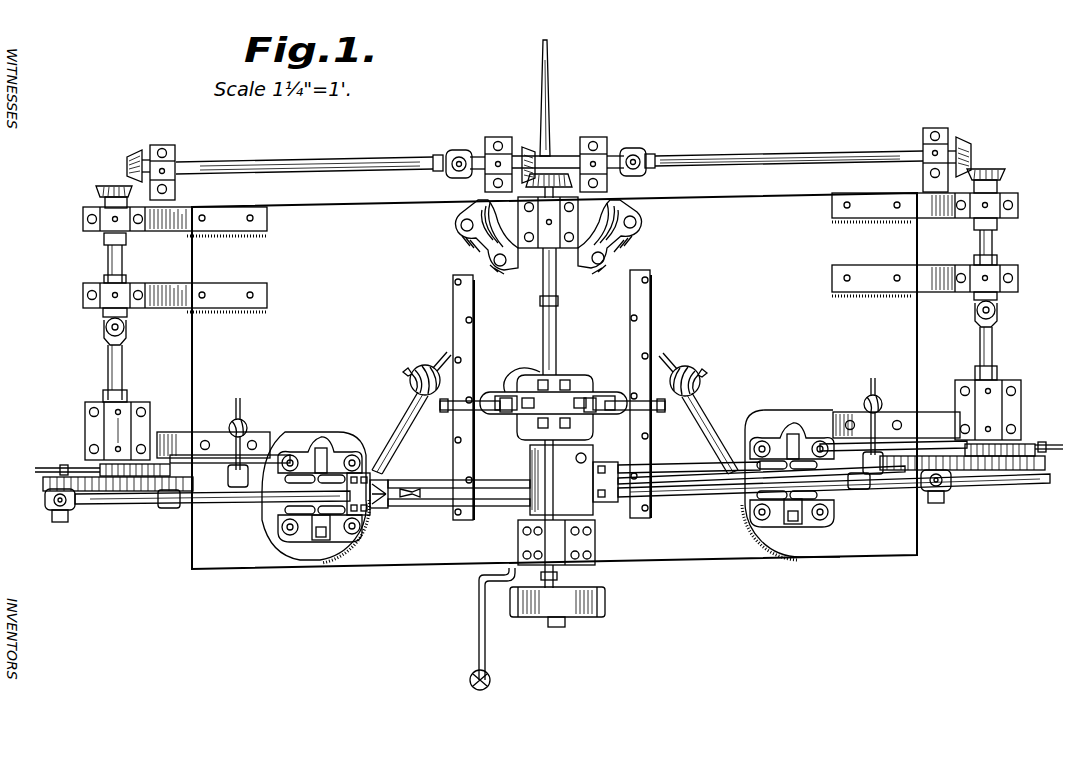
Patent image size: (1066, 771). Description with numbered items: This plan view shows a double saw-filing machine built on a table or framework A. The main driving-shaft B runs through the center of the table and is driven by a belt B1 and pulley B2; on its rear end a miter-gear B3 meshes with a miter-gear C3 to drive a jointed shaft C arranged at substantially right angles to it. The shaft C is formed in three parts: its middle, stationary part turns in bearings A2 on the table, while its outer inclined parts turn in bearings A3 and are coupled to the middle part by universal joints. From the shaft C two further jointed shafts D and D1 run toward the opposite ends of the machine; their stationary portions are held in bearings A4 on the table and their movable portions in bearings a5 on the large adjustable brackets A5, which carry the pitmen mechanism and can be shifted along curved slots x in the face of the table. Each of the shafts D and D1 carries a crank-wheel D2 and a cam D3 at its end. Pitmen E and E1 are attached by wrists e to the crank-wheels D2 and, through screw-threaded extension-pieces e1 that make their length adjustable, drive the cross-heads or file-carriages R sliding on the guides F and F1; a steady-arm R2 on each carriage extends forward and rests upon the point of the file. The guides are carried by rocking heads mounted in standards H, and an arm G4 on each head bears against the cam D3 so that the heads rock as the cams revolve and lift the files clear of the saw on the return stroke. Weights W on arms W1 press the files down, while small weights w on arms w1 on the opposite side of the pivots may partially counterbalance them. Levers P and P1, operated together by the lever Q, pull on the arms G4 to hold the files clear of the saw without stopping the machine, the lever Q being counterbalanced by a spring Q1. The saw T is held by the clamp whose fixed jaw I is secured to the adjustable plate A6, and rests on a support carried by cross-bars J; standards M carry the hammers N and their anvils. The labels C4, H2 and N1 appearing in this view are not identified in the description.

The table or framework A is at (714, 590).
The bearings A2 is at (490, 145).
The bearings A3 is at (176, 162).
The bearings A4 is at (138, 232).
The adjustable brackets A5 is at (293, 437).
The adjustable plate A6 is at (603, 380).
The bearings a5 is at (136, 406).
The driving-shaft B is at (554, 300).
The belt B1 is at (606, 597).
The pulley B2 is at (595, 612).
The miter-gear B3 is at (572, 176).
The jointed shaft C is at (322, 163).
The miter-gear C3 is at (526, 150).
The left slide bar C4 is at (176, 463).
The jointed shaft D is at (996, 242).
The jointed shaft D1 is at (107, 260).
The crank-wheels D2 is at (44, 483).
The cams D3 is at (100, 468).
The pitman E is at (715, 495).
The pitman E1 is at (123, 505).
The wrists e is at (62, 522).
The screw-threaded extension-pieces e1 is at (168, 509).
The guide F is at (688, 467).
The guide F1 is at (418, 507).
The arm part G4 is at (937, 446).
The standard H is at (770, 441).
The left chain bracket H2 is at (338, 448).
The jaw I is at (572, 461).
The cross-bars J is at (532, 517).
The standards M is at (573, 390).
The hammers N is at (507, 413).
The housing cross rods N1 is at (670, 418).
The lever P is at (1053, 444).
The lever P1 is at (67, 461).
The lever Q is at (543, 82).
The spring Q1 is at (492, 676).
The file-carriages R is at (370, 512).
The steady-arm R2 is at (498, 482).
The saw T is at (540, 305).
The weights W is at (420, 367).
The arms W1 is at (405, 410).
The small weights w is at (247, 422).
The small arms w1 is at (240, 418).
The curved slots x is at (388, 437).